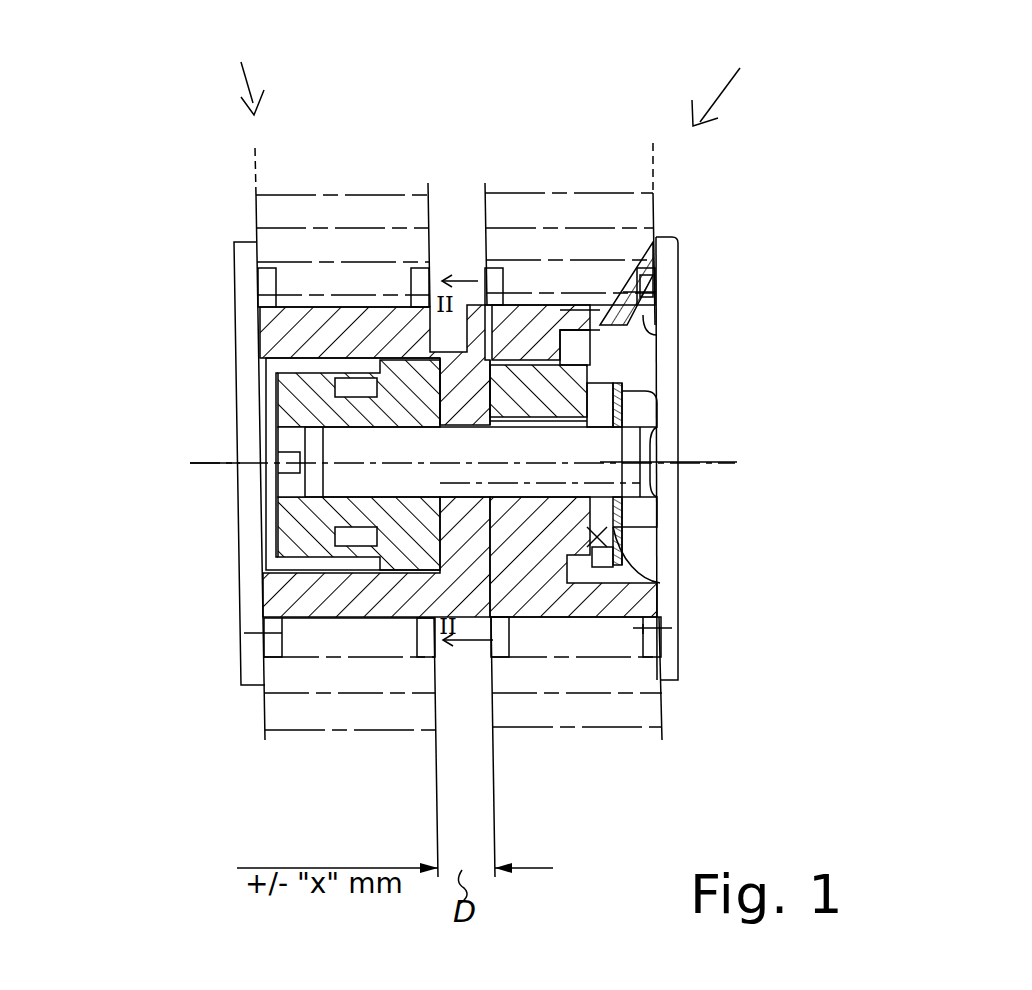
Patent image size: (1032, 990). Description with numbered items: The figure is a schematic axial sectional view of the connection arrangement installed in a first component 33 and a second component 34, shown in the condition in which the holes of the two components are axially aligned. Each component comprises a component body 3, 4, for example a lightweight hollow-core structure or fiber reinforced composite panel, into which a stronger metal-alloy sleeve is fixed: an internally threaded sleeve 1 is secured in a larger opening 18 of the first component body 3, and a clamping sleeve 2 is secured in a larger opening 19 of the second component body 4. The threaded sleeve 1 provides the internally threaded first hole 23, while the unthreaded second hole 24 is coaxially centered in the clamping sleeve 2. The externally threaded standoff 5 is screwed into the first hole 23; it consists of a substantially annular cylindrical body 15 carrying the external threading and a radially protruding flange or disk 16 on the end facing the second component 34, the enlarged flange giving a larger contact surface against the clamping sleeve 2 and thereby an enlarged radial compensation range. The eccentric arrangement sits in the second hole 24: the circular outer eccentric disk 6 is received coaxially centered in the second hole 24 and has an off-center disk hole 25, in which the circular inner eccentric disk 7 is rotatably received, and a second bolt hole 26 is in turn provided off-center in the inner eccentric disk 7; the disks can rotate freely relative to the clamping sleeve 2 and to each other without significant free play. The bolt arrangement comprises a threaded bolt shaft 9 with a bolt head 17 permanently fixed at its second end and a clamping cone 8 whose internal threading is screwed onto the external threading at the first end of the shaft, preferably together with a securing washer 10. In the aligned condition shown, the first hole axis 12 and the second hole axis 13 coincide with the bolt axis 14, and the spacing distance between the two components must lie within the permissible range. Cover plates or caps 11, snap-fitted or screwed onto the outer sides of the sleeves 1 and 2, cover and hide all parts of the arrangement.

The internally threaded sleeve 1 is at (278, 332).
The clamping sleeve 2 is at (660, 239).
The component body 3 is at (345, 215).
The component body 4 is at (572, 215).
The externally threaded standoff 5 is at (445, 413).
The outer eccentric disk 6 is at (565, 383).
The inner eccentric disk 7 is at (650, 583).
The clamping cone 8 is at (295, 510).
The bolt shaft 9 is at (583, 472).
The securing washer 10 is at (620, 512).
The cover plates or caps 11 is at (244, 633).
The first hole axis 12 is at (395, 421).
The second hole axis 13 is at (715, 462).
The bolt axis 14 is at (212, 463).
The cylindrical body 15 is at (420, 350).
The flange or disk 16 is at (485, 290).
The bolt head 17 is at (640, 408).
The larger opening 18 is at (360, 325).
The larger opening 19 is at (538, 308).
The first hole 23 is at (265, 367).
The second hole 24 is at (672, 312).
The disk hole 25 is at (590, 364).
The second bolt hole 26 is at (645, 440).
The first component 33 is at (243, 67).
The second component 34 is at (736, 75).